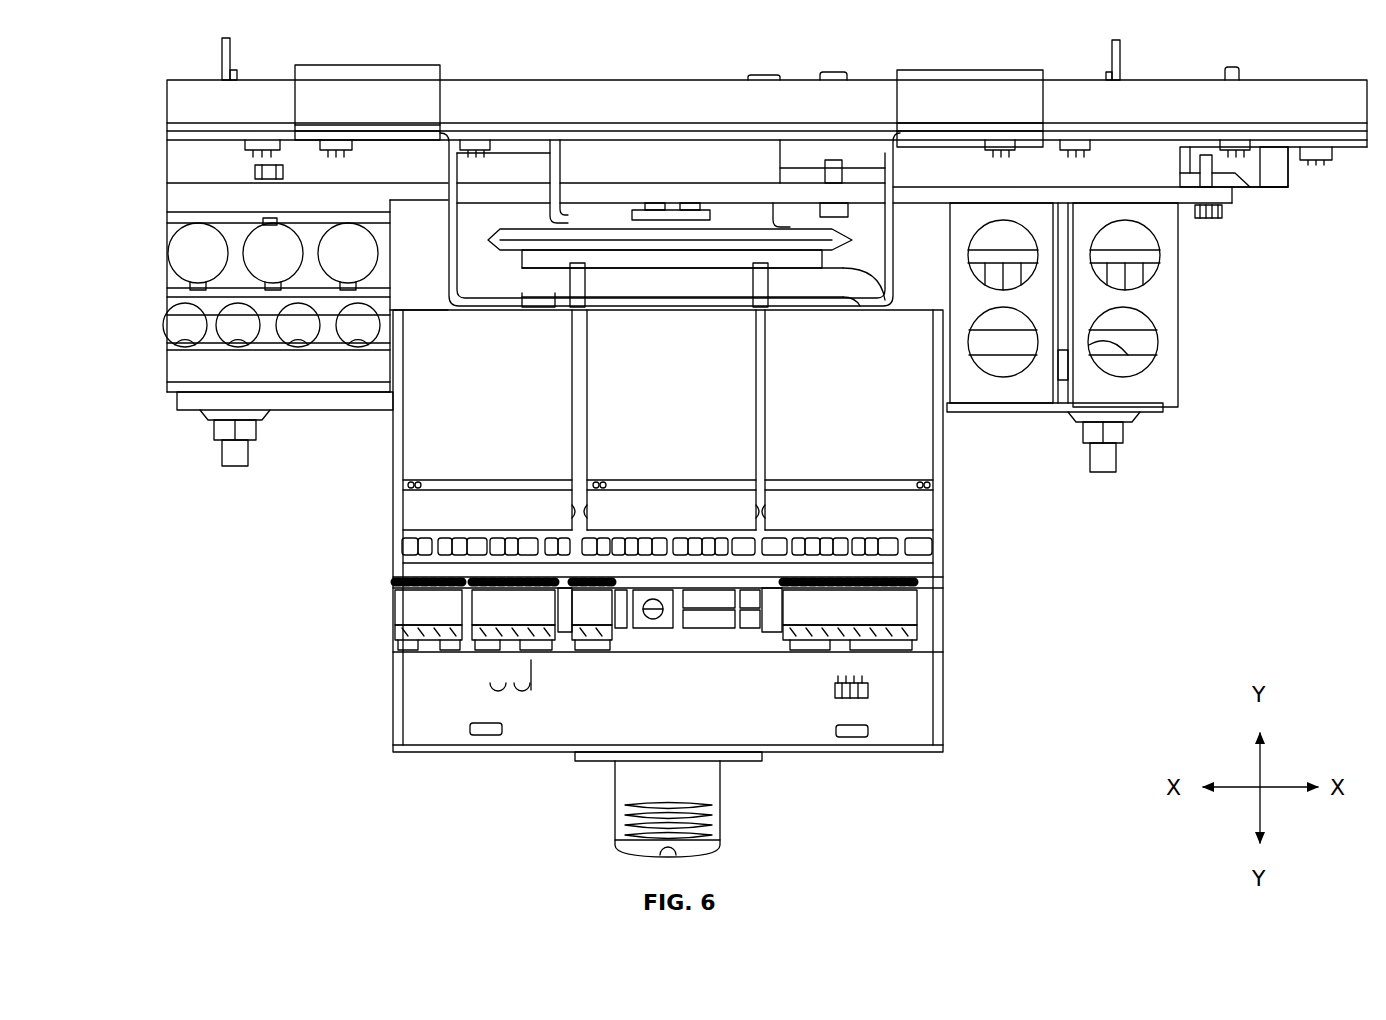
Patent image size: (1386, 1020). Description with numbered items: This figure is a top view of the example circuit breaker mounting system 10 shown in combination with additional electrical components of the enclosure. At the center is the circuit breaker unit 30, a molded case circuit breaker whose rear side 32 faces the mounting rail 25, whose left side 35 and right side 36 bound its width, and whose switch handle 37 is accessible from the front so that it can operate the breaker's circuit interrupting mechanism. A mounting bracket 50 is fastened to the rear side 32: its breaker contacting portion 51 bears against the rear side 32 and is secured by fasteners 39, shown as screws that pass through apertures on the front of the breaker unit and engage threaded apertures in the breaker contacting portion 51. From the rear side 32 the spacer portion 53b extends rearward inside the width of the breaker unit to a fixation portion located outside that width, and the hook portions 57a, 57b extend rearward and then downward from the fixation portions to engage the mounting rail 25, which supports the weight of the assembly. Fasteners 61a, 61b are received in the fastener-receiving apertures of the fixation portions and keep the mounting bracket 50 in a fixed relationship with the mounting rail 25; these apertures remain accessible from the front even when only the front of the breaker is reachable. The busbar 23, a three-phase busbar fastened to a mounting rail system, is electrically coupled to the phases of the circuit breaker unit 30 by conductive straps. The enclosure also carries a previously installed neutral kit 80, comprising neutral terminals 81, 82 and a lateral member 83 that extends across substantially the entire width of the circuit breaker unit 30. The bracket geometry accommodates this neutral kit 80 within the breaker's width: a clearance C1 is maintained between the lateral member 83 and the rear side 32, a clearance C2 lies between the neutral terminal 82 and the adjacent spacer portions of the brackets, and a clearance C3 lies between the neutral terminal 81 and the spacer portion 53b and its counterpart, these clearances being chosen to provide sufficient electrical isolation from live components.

The circuit breaker mounting system 10 is at (1050, 646).
The busbar 23 is at (512, 225).
The mounting rail 25 is at (563, 166).
The circuit breaker unit 30 is at (365, 702).
The rear side 32 is at (421, 303).
The left side 35 is at (378, 538).
The right side 36 is at (950, 557).
The switch handle 37 is at (722, 818).
The fasteners 39 is at (568, 288).
The mounting bracket 50 is at (440, 228).
The breaker contacting portion 51 is at (484, 302).
The spacer portion 53b is at (462, 148).
The hook portion 57a is at (895, 117).
The hook portion 57b is at (293, 117).
The fastener 61a is at (1012, 148).
The fastener 61b is at (325, 152).
The neutral kit 80 is at (238, 183).
The neutral terminal 81 is at (333, 412).
The neutral terminal 82 is at (998, 414).
The lateral member 83 is at (645, 183).
The clearance C1 is at (910, 305).
The clearance C2 is at (949, 252).
The clearance C3 is at (446, 207).